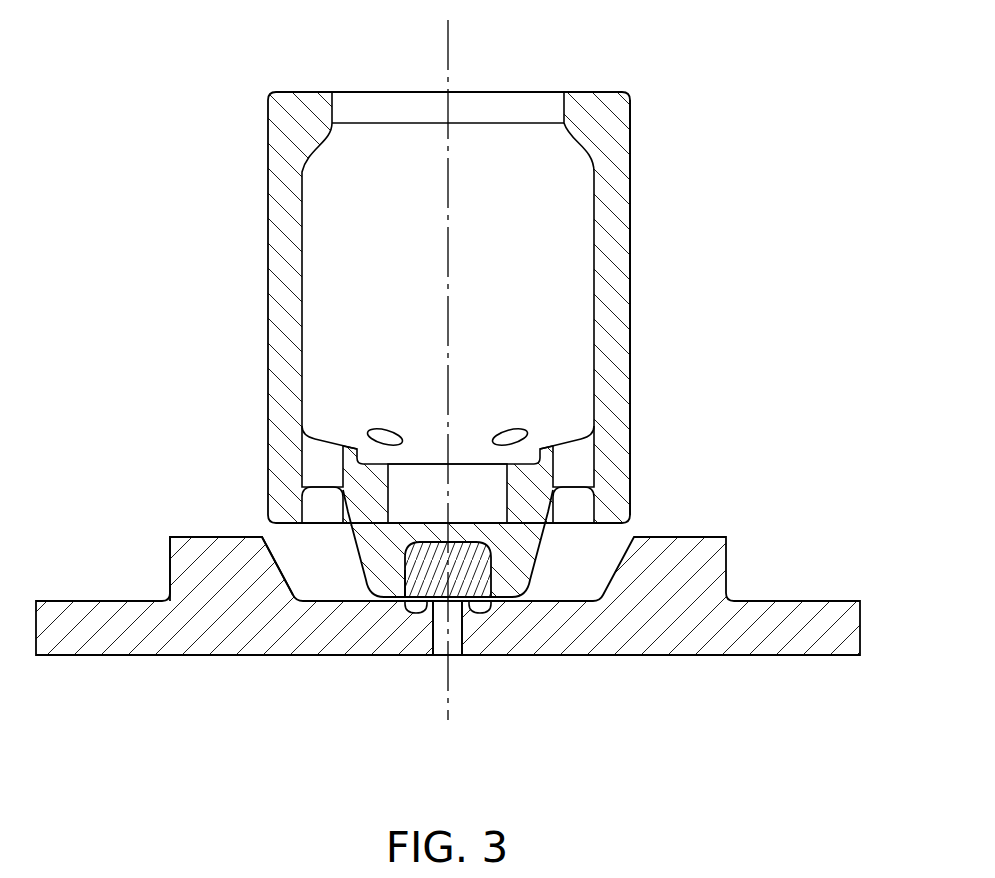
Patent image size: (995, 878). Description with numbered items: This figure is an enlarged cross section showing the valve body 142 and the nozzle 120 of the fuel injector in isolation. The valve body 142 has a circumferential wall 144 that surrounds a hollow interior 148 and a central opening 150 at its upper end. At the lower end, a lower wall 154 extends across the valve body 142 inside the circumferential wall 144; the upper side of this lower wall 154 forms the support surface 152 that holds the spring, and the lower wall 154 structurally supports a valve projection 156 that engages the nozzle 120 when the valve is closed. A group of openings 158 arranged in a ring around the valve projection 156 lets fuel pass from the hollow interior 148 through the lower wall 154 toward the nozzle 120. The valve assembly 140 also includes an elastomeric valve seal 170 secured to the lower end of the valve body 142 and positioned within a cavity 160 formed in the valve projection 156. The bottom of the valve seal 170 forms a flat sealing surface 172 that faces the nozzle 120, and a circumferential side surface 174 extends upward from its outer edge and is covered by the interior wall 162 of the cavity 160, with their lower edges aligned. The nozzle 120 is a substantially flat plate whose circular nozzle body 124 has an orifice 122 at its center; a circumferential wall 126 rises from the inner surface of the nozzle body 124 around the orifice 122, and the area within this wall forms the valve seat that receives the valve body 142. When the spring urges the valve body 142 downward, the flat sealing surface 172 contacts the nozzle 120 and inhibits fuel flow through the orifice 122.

The nozzle 120 is at (744, 567).
The orifice 122 is at (456, 672).
The nozzle body 124 is at (698, 632).
The circumferential wall 126 is at (210, 560).
The valve assembly 140 is at (176, 377).
The valve body 142 is at (640, 220).
The circumferential wall 144 is at (614, 340).
The hollow interior 148 is at (360, 263).
The central opening 150 is at (497, 108).
The support surface 152 is at (547, 437).
The lower wall 154 is at (355, 475).
The valve projection 156 is at (563, 556).
The openings 158 is at (500, 428).
The cavity 160 is at (401, 551).
The interior wall 162 is at (405, 602).
The valve seal 170 is at (467, 584).
The flat sealing surface 172 is at (429, 604).
The side surface 174 is at (406, 579).